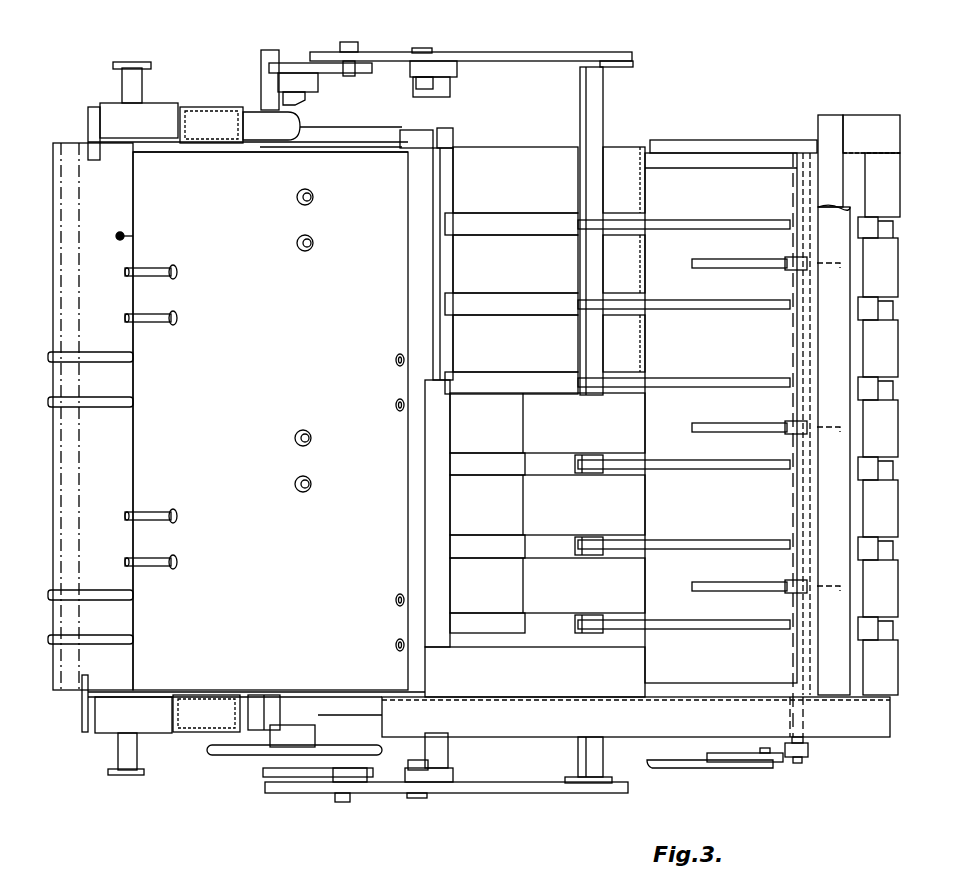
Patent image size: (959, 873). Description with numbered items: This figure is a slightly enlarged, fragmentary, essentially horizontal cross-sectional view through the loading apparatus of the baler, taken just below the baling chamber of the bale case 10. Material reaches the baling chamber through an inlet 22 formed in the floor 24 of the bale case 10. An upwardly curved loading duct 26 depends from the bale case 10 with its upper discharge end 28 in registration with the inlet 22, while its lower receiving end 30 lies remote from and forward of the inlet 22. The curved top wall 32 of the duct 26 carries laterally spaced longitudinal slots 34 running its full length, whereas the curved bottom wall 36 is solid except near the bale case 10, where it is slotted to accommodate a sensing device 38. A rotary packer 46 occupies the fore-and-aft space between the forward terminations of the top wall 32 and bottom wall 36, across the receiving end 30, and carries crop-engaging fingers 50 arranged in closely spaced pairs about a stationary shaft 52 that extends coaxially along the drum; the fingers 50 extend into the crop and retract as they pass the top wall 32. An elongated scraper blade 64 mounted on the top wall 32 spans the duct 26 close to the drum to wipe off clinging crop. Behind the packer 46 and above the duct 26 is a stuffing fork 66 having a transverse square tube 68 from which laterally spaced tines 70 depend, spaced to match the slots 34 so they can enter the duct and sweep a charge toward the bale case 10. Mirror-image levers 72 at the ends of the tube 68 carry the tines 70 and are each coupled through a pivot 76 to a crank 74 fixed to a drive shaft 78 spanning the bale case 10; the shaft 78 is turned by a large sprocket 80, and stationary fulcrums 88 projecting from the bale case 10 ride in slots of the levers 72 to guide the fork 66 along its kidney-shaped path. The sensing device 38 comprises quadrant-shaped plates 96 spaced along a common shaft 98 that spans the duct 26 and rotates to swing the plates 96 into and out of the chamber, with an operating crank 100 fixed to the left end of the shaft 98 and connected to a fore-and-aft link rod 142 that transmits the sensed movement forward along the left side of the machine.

The bale case 10 is at (638, 738).
The inlet 22 is at (797, 405).
The floor 24 is at (612, 503).
The loading duct 26 is at (630, 146).
The upper discharge end 28 is at (737, 145).
The lower receiving end 30 is at (70, 470).
The top wall 32 is at (502, 152).
The longitudinal slots 34 is at (530, 300).
The bottom wall 36 is at (685, 178).
The sensing device 38 is at (741, 258).
The rotary packer 46 is at (116, 235).
The crop-engaging fingers 50 is at (125, 314).
The stationary shaft 52 is at (262, 56).
The scraper blade 64 is at (410, 280).
The stuffing fork 66 is at (612, 47).
The transverse square tube 68 is at (590, 102).
The tines 70 is at (683, 229).
The levers 72 is at (553, 53).
The crank 74 is at (295, 68).
The pivot 76 is at (350, 44).
The drive shaft 78 is at (300, 100).
The large sprocket 80 is at (222, 755).
The stationary fulcrums 88 is at (430, 50).
The quadrant-shaped plates 96 is at (712, 268).
The shaft 98 is at (795, 485).
The operating crank 100 is at (790, 758).
The link rod 142 is at (690, 770).